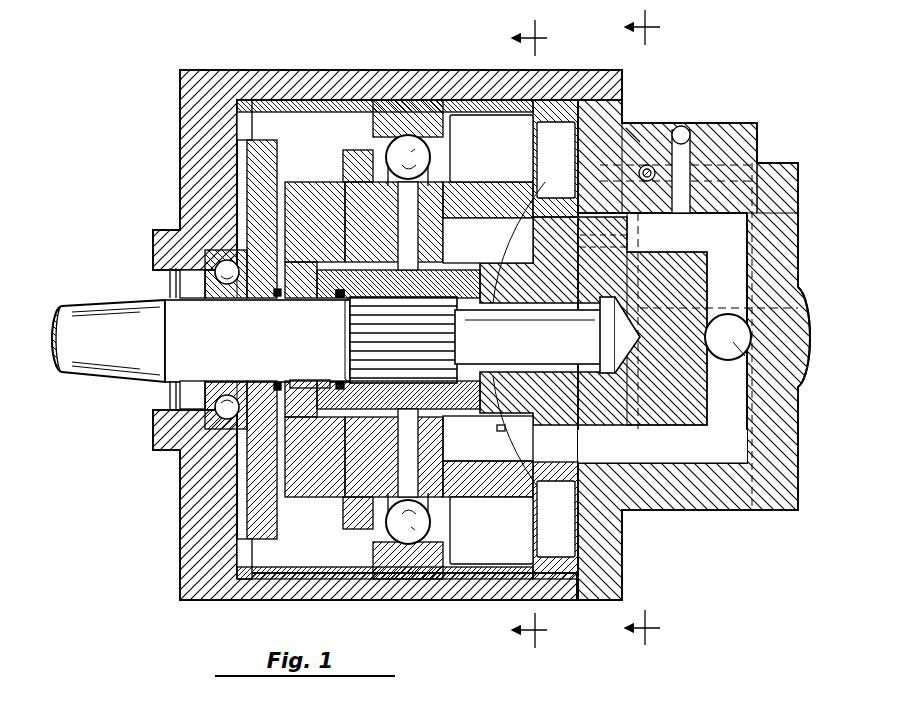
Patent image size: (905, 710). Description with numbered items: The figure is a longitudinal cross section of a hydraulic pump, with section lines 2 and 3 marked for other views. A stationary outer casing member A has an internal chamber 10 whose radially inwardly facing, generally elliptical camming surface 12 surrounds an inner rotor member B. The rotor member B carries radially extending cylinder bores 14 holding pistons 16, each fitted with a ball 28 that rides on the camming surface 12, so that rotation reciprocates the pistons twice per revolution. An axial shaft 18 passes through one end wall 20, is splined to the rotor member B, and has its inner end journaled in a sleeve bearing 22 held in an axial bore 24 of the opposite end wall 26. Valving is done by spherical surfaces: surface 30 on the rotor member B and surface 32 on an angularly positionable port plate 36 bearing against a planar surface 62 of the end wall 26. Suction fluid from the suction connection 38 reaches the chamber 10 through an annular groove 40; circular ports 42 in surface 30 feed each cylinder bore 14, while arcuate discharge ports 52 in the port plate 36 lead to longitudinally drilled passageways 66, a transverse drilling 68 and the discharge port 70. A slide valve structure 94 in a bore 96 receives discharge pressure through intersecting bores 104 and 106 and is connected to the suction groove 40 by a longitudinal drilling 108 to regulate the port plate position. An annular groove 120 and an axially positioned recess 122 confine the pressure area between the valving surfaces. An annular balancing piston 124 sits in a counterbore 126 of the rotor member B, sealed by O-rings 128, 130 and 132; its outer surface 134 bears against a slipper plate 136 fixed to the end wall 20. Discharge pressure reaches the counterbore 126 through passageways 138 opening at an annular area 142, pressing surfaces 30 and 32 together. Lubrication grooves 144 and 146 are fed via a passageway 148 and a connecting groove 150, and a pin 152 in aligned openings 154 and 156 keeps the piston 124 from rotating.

The outer casing member A is at (197, 64).
The inner member (rotor member) B is at (240, 160).
The internal chamber 10 is at (252, 110).
The camming surface 12 is at (418, 138).
The cylinder bores 14 is at (347, 178).
The pistons 16 is at (432, 450).
The shaft 18 is at (100, 350).
The end wall 20 is at (193, 98).
The sleeve bearing 22 is at (598, 385).
The axial bore 24 is at (620, 312).
The opposite end wall 26 is at (632, 548).
The ball 28 is at (393, 138).
The valving surface 30 is at (546, 196).
The valving surface 32 is at (507, 182).
The port plate 36 is at (578, 310).
The suction connection 38 is at (782, 165).
The annular groove 40 is at (576, 135).
The circular ports 42 is at (452, 250).
The arcuately shaped discharge ports 52 is at (456, 214).
The planar surface 62 is at (538, 530).
The longitudinally drilled passageways 66 is at (666, 452).
The transverse drilling 68 is at (710, 400).
The discharge port 70 is at (798, 400).
The slide valve structure 94 is at (653, 171).
The bore 96 is at (650, 168).
The intersecting bore 104 is at (680, 236).
The intersecting bore 106 is at (752, 122).
The longitudinal drilling 108 is at (637, 126).
The annular groove 120 is at (528, 495).
The axially positioned recess 122 is at (468, 312).
The annular balancing piston 124 is at (205, 452).
The counterbore 126 is at (180, 506).
The O-ring seal 128 is at (283, 495).
The O-ring seal 130 is at (300, 392).
The O-ring seal 132 is at (338, 296).
The outer surface 134 is at (275, 393).
The slipper plate 136 is at (258, 196).
The interconnecting passageways 138 is at (388, 272).
The annular area 142 is at (508, 426).
The annular groove 144 is at (292, 245).
The annular groove 146 is at (257, 341).
The passageway 148 is at (330, 268).
The groove 150 is at (220, 304).
The pin 152 is at (330, 440).
The opening 154 is at (300, 374).
The opening 156 is at (362, 404).
The section line 2 is at (517, 334).
The section line 3 is at (631, 327).